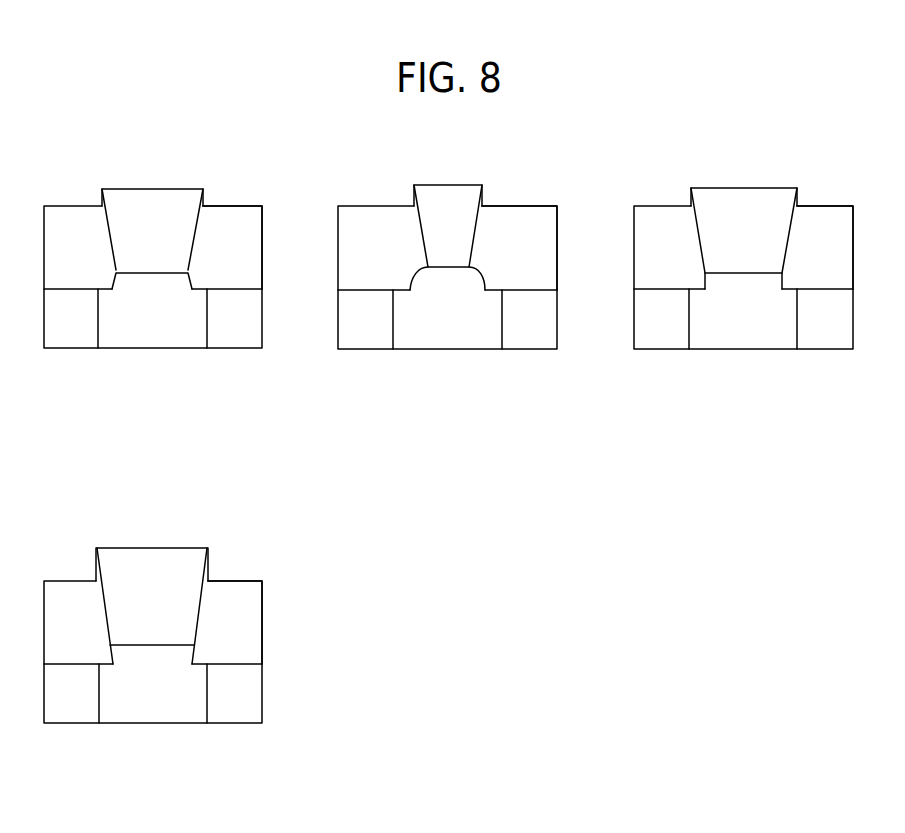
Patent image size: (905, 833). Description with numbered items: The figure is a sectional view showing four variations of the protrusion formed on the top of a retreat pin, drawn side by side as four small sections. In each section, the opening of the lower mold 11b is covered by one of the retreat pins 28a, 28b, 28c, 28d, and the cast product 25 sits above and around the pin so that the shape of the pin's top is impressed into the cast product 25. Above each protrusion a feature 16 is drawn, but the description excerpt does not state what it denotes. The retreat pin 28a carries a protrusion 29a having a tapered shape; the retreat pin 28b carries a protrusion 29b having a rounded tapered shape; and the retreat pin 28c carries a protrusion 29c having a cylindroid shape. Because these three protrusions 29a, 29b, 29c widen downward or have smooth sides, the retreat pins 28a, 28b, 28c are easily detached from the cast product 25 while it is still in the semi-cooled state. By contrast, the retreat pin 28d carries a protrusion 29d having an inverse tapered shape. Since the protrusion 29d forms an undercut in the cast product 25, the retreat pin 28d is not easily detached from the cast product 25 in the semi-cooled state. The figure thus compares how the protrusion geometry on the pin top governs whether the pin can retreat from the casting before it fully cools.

The groove 16 is at (151, 187).
The cast product 25 is at (238, 207).
The lower mold 11b is at (72, 297).
The retreat pin 28a is at (158, 348).
The retreat pin 28b is at (448, 344).
The retreat pin 28c is at (747, 344).
The retreat pin 28d is at (153, 724).
The protrusion 29a is at (190, 277).
The protrusion 29b is at (483, 277).
The protrusion 29c is at (785, 277).
The protrusion 29d is at (197, 657).